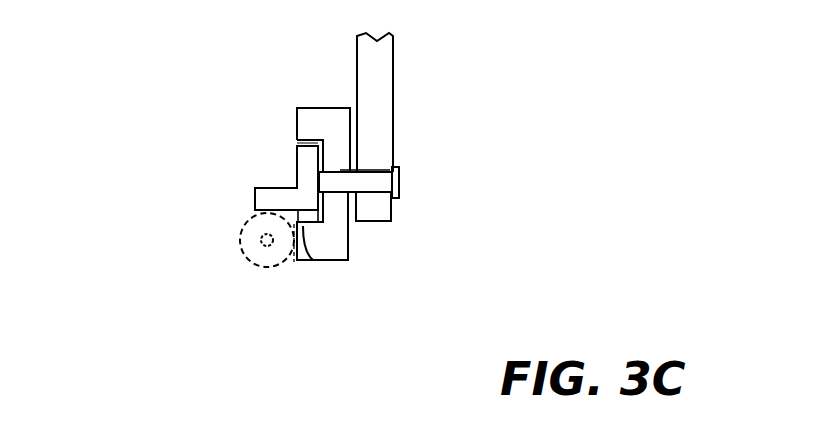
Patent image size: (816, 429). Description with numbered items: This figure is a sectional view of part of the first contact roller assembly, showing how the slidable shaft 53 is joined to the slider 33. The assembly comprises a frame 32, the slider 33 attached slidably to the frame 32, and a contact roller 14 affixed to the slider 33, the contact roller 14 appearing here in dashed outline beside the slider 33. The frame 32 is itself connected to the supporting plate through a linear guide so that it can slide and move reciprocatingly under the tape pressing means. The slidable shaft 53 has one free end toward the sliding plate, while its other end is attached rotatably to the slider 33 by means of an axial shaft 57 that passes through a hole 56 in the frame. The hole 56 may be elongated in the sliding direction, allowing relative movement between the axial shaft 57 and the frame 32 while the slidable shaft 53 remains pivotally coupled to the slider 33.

The contact roller 14 is at (251, 259).
The frame 32 is at (349, 252).
The slider 33 is at (255, 188).
The slidable shaft 53 is at (395, 47).
The hole 56 is at (356, 170).
The axial shaft 57 is at (389, 182).